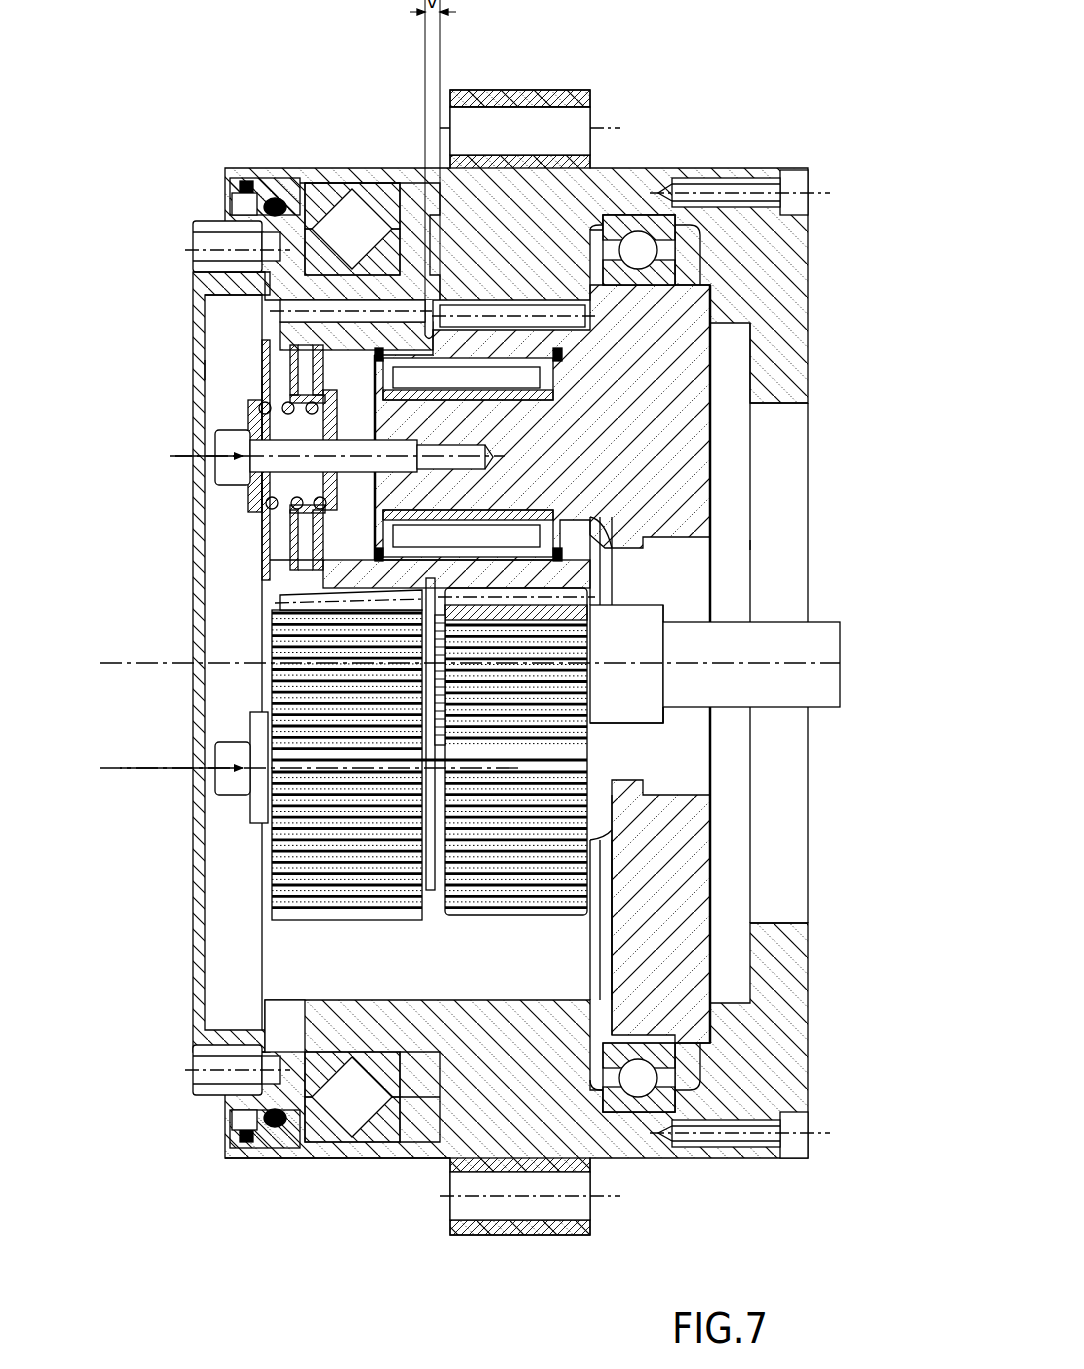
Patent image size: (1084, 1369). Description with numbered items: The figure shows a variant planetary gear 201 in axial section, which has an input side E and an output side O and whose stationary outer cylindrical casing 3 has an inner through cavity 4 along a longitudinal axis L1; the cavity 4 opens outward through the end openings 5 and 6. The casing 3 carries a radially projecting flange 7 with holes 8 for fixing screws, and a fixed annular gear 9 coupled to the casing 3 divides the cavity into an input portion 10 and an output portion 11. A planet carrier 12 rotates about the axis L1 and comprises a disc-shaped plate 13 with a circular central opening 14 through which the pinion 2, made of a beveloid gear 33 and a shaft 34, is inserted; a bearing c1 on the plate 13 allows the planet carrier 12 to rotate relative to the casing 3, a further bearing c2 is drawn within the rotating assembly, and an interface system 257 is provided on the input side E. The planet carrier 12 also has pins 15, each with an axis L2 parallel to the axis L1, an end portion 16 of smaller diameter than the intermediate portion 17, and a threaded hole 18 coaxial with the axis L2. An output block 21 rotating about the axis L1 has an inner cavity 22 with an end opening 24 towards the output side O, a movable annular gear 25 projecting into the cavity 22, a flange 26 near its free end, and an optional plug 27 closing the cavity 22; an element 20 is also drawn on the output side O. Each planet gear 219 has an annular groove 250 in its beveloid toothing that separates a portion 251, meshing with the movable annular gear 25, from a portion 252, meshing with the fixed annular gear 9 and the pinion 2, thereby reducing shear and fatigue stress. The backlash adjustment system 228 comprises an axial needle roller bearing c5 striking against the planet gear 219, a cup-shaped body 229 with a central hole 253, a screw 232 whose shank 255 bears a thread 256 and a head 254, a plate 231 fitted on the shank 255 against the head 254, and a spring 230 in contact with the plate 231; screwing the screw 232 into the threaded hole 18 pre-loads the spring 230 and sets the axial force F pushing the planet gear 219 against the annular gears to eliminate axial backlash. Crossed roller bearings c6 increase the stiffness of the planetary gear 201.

The planetary gear 201 is at (834, 126).
The interface system 257 is at (798, 262).
The flange 7 is at (554, 96).
The holes 8 is at (568, 112).
The outer cylindrical casing 3 is at (224, 1160).
The planet gear 219 is at (457, 278).
The movable annular gear 25 is at (320, 196).
The output block 21 is at (233, 212).
The thread 256 is at (236, 262).
The inner through cavity 4 is at (234, 962).
The cover region 20 is at (224, 366).
The output side O is at (222, 372).
The screw 232 is at (236, 400).
The end opening 24 is at (232, 1052).
The end opening 6 is at (246, 1126).
The output portion 11 is at (352, 1112).
The crossed roller bearings c6 is at (372, 1128).
The flange 26 is at (396, 1048).
The inner cavity 22 is at (306, 1010).
The pin 15 is at (662, 402).
The contact point c2 is at (625, 372).
The threaded hole 18 is at (714, 462).
The intermediate portion 17 is at (768, 426).
The input side E is at (787, 545).
The portion 252 is at (503, 302).
The portion 251 is at (342, 300).
The groove 250 is at (430, 302).
The gear 33 is at (660, 657).
The shaft 34 is at (770, 626).
The pinion 2 is at (790, 694).
The longitudinal axis L1 is at (840, 670).
The end portion 16 is at (467, 677).
The planet carrier 12 is at (686, 910).
The central opening 14 is at (686, 790).
The disc-shaped plate 13 is at (680, 958).
The fixed annular gear 9 is at (607, 222).
The bearing c1 is at (682, 212).
The input portion 10 is at (692, 1062).
The end opening 5 is at (700, 1078).
The cup-shaped body 229 is at (292, 582).
The backlash adjustment system 228 is at (258, 512).
The plate 231 is at (262, 450).
The central hole 253 is at (262, 462).
The spring 230 is at (270, 548).
The plug 27 is at (294, 546).
The bearing c5 is at (282, 612).
The shank 255 is at (258, 486).
The head 254 is at (252, 463).
The axis L2 is at (178, 456).
The axial force F is at (218, 450).